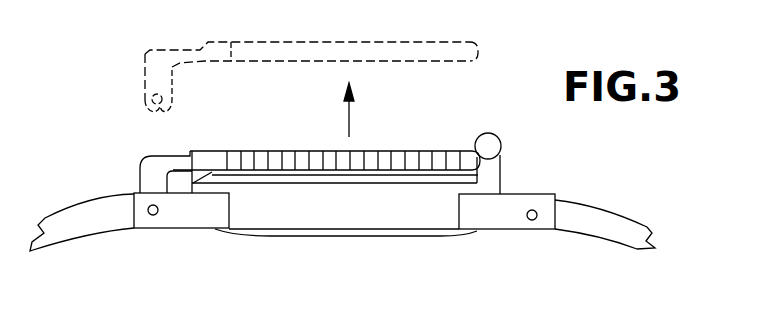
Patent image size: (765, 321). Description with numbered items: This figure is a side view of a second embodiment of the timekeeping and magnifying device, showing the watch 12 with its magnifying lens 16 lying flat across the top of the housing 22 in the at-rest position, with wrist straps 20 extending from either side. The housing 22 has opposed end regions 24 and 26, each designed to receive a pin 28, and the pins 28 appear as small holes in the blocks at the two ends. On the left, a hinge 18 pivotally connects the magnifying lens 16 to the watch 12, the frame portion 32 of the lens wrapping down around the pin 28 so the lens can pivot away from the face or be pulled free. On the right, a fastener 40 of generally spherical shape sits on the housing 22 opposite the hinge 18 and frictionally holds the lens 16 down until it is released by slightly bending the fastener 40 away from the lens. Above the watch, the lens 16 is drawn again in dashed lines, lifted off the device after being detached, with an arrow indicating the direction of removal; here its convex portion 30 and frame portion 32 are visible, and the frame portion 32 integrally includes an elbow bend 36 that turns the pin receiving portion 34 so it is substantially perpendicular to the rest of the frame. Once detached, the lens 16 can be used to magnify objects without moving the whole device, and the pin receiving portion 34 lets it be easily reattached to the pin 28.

The watch 12 is at (393, 249).
The magnifying lens 16 is at (334, 32).
The hinge 18 is at (118, 183).
The wrist strap 20 is at (78, 204).
The housing 22 is at (322, 236).
The end region 24 is at (147, 230).
The end region 26 is at (531, 196).
The pin 28 is at (158, 212).
The convex portion 30 is at (437, 43).
The frame portion 32 is at (207, 43).
The pin receiving portion 34 is at (138, 105).
The elbow bend 36 is at (145, 56).
The fastener 40 is at (503, 133).